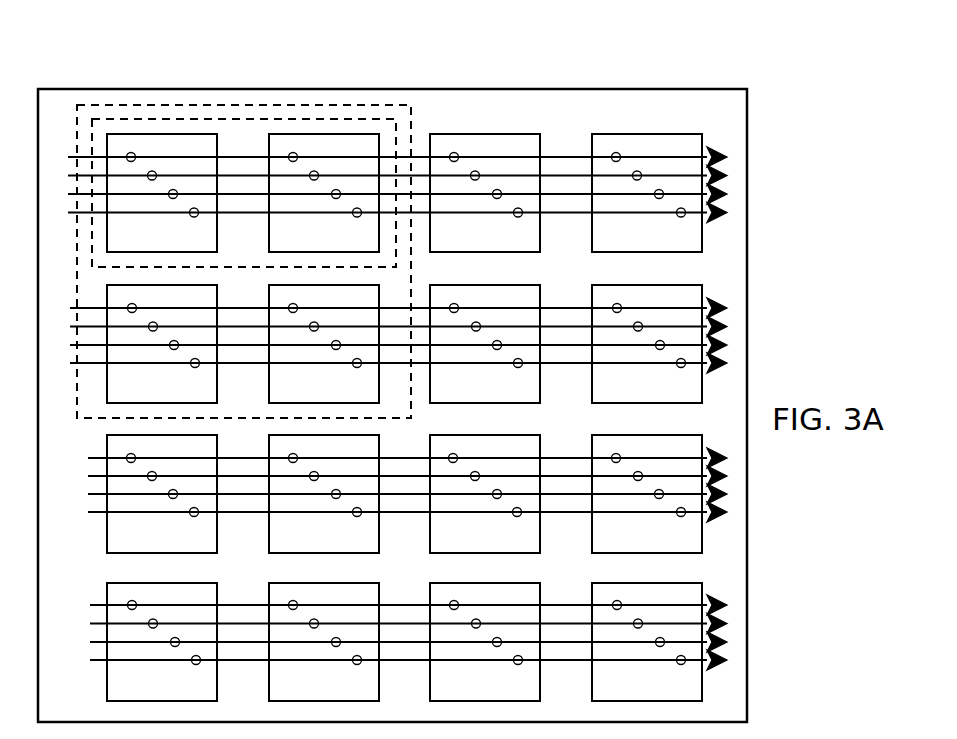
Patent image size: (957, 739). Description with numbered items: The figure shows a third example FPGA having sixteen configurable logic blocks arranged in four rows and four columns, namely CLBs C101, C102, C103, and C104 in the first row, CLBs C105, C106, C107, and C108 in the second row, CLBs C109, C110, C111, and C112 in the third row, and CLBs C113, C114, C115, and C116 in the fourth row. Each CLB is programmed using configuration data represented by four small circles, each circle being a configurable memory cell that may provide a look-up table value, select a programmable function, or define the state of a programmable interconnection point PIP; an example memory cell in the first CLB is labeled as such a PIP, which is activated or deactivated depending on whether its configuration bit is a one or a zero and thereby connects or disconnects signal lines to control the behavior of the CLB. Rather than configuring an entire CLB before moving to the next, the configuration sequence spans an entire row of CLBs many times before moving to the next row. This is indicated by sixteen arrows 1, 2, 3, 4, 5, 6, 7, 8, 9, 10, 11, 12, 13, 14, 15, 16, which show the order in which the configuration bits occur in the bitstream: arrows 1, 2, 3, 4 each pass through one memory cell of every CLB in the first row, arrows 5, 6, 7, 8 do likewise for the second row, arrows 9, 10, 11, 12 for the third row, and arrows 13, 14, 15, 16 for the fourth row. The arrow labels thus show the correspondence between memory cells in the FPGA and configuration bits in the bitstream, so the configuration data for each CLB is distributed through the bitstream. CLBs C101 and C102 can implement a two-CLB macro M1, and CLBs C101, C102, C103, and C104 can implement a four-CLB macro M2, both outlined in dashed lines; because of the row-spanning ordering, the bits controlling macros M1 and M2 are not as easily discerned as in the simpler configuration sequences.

The arrow 1 is at (388, 157).
The arrow 2 is at (388, 176).
The arrow 3 is at (388, 194).
The arrow 4 is at (388, 213).
The arrow 5 is at (388, 308).
The arrow 6 is at (388, 327).
The arrow 7 is at (388, 345).
The arrow 8 is at (388, 363).
The arrow 9 is at (397, 458).
The arrow 10 is at (392, 476).
The arrow 11 is at (392, 494).
The arrow 12 is at (392, 512).
The arrow 13 is at (393, 605).
The arrow 14 is at (393, 624).
The arrow 15 is at (393, 642).
The arrow 16 is at (393, 660).
The CLB C101 is at (162, 193).
The CLB C102 is at (324, 193).
The CLB C103 is at (485, 193).
The CLB C104 is at (647, 193).
The CLB C105 is at (162, 344).
The CLB C106 is at (324, 344).
The CLB C107 is at (485, 344).
The CLB C108 is at (647, 344).
The CLB C109 is at (162, 494).
The CLB C110 is at (324, 494).
The CLB C111 is at (485, 494).
The CLB C112 is at (647, 494).
The CLB C113 is at (162, 642).
The CLB C114 is at (324, 642).
The CLB C115 is at (485, 642).
The CLB C116 is at (647, 642).
The programmable interconnection point PIP is at (131, 152).
The macro M1 is at (290, 119).
The macro M2 is at (395, 105).